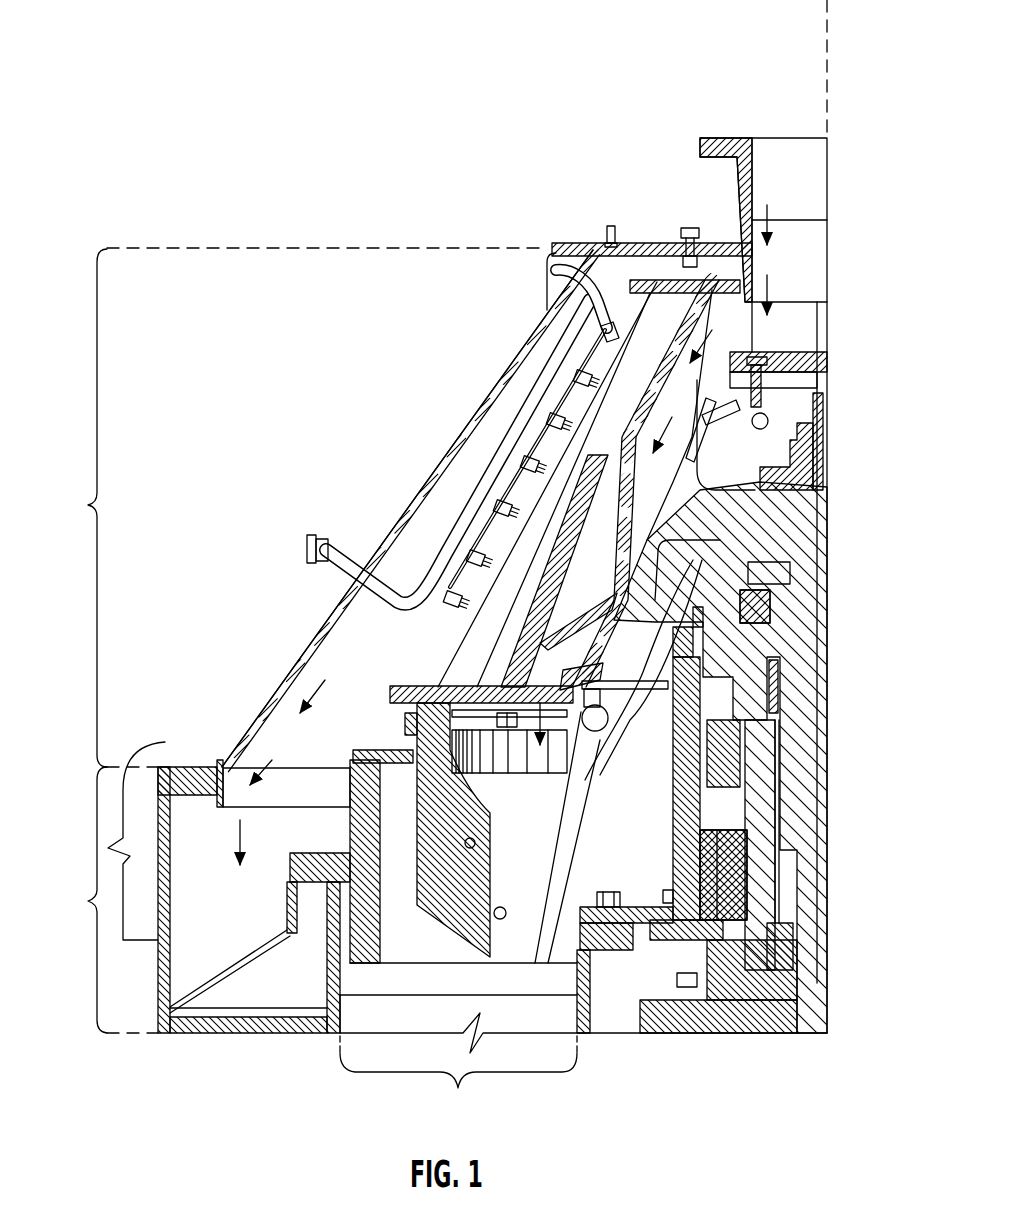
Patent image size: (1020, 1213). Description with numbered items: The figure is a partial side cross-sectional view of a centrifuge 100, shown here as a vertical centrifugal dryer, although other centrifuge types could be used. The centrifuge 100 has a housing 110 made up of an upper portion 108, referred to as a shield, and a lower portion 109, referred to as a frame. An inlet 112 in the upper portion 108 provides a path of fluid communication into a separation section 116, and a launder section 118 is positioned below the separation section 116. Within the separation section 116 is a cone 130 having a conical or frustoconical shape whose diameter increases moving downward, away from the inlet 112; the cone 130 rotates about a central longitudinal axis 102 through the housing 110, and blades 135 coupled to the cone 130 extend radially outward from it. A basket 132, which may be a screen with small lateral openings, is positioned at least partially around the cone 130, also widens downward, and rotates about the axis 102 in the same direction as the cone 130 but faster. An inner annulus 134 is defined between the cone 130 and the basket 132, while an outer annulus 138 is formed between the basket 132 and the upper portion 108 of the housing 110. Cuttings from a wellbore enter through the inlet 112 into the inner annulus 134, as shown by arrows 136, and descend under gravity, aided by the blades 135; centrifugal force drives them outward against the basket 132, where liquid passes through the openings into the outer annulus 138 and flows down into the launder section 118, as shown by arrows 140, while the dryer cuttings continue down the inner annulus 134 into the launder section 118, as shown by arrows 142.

The centrifuge 100 is at (183, 40).
The central longitudinal axis 102 is at (827, 38).
The upper portion 108 is at (283, 687).
The lower portion 109 is at (158, 1010).
The housing 110 is at (376, 508).
The inlet 112 is at (700, 143).
The separation section 116 is at (307, 688).
The launder section 118 is at (101, 887).
The cone 130 is at (777, 527).
The basket 132 is at (570, 537).
The inner annulus 134 is at (527, 695).
The blades 135 is at (633, 518).
The arrows 136 is at (767, 215).
The outer annulus 138 is at (337, 647).
The arrows 140 is at (273, 757).
The arrows 142 is at (575, 750).